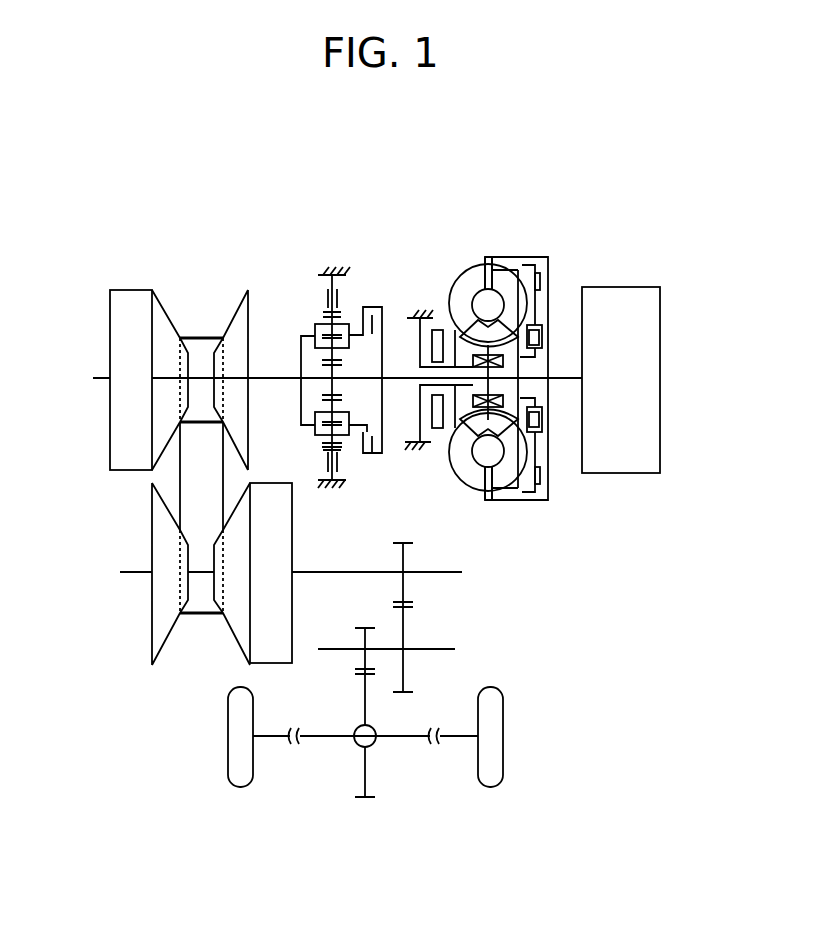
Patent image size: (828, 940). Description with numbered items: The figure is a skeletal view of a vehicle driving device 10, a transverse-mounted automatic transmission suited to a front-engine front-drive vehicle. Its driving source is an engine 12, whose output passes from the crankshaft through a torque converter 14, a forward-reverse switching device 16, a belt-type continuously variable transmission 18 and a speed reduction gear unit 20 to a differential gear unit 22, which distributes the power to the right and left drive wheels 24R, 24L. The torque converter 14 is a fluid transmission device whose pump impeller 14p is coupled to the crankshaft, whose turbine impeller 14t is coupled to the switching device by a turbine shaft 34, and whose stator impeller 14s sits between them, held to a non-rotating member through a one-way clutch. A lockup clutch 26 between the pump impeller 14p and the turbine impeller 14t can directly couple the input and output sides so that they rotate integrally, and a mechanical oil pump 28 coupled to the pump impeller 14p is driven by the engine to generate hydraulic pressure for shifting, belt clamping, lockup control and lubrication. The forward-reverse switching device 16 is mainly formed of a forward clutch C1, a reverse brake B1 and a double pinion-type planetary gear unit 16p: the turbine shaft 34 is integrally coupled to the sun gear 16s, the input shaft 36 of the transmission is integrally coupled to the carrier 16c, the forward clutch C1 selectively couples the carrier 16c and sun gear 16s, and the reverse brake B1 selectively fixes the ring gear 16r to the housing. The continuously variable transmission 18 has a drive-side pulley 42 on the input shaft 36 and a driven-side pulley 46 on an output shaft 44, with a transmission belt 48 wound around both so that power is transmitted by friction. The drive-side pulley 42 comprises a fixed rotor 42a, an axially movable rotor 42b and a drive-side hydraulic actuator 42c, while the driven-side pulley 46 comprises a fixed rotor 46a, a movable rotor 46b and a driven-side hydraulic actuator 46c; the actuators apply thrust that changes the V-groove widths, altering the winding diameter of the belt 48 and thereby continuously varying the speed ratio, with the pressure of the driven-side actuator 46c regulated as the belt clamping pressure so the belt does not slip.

The vehicle driving device 10 is at (492, 190).
The engine 12 is at (652, 328).
The torque converter 14 is at (487, 369).
The pump impeller 14p is at (463, 473).
The stator impeller 14s is at (470, 438).
The turbine impeller 14t is at (500, 480).
The forward-reverse switching device 16 is at (333, 334).
The carrier 16c is at (313, 327).
The double pinion-type planetary gear unit 16p is at (318, 266).
The ring gear 16r is at (324, 455).
The sun gear 16s is at (326, 387).
The belt-type continuously variable transmission 18 is at (201, 496).
The speed reduction gear unit 20 is at (466, 618).
The differential gear unit 22 is at (358, 743).
The left drive wheel 24L is at (233, 758).
The right drive wheel 24R is at (498, 748).
The lockup clutch 26 is at (548, 277).
The mechanical oil pump 28 is at (437, 328).
The turbine shaft 34 is at (389, 383).
The input shaft 36 is at (268, 378).
The drive-side pulley 42 is at (159, 392).
The fixed rotor 42a is at (242, 318).
The movable rotor 42b is at (160, 317).
The drive-side hydraulic actuator 42c is at (120, 308).
The output shaft 44 is at (345, 576).
The driven-side pulley 46 is at (204, 592).
The fixed rotor 46a is at (155, 625).
The movable rotor 46b is at (238, 620).
The driven-side hydraulic actuator 46c is at (287, 555).
The transmission belt 48 is at (203, 337).
The reverse brake B1 is at (320, 301).
The forward clutch C1 is at (370, 369).